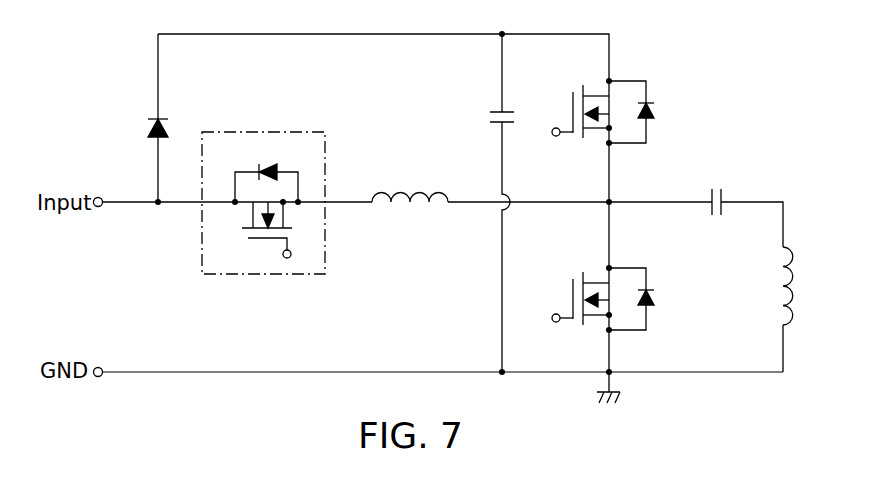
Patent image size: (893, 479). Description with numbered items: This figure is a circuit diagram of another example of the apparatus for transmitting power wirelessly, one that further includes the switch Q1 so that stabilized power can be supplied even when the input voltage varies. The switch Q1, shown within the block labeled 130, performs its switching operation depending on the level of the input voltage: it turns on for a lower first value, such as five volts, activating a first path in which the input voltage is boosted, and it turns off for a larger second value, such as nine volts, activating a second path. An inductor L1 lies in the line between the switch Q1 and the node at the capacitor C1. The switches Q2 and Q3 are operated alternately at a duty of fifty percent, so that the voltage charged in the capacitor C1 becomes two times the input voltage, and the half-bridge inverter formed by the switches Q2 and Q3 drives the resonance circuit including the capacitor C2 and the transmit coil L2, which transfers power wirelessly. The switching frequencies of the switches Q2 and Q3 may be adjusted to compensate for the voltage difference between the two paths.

The switching unit 130 is at (262, 132).
The switch Q1 is at (259, 203).
The switch Q2 is at (613, 102).
The switch Q3 is at (613, 288).
The first inductor L1 is at (410, 183).
The transmit coil L2 is at (803, 286).
The capacitor C1 is at (488, 203).
The capacitor C2 is at (714, 190).